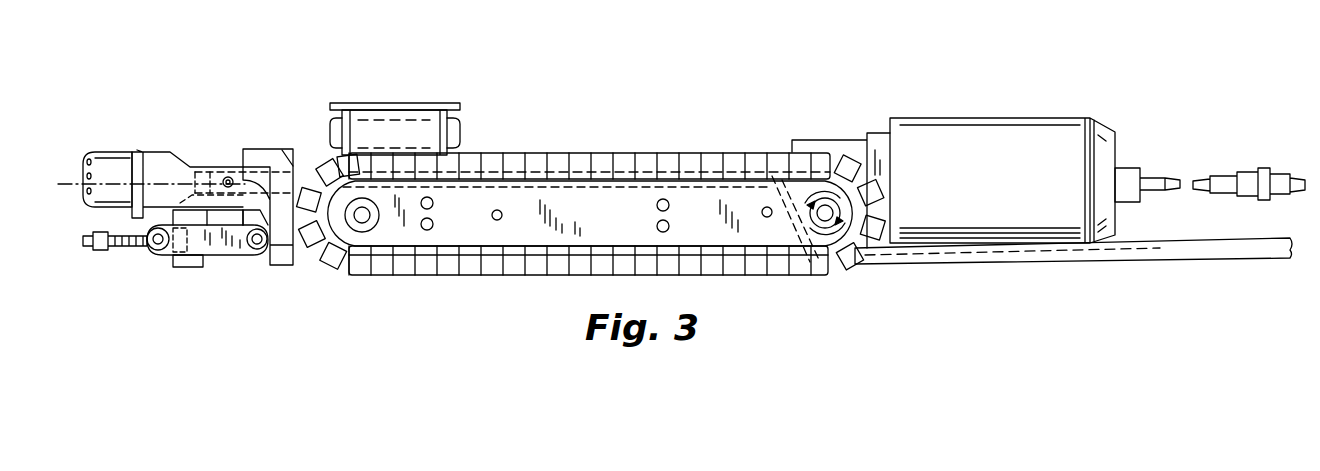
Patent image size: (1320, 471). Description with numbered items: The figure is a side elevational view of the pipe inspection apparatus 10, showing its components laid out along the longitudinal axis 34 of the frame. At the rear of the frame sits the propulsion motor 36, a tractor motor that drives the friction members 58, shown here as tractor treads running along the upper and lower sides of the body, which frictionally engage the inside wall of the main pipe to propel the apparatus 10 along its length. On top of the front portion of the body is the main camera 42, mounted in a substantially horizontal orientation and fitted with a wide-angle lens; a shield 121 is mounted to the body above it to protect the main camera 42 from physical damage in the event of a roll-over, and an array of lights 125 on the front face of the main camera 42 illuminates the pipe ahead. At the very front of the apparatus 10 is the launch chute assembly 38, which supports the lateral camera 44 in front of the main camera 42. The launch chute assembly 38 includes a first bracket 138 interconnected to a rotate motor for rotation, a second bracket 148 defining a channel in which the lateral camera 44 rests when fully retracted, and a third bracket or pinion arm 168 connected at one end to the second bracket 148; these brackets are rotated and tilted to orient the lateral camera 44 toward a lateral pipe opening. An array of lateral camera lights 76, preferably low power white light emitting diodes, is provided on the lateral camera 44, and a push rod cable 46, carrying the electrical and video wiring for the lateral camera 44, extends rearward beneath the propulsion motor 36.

The apparatus 10 is at (650, 80).
The longitudinal axis 34 is at (72, 186).
The propulsion motor 36 is at (1025, 125).
The launch chute assembly 38 is at (245, 291).
The main camera 42 is at (418, 122).
The lateral camera 44 is at (125, 158).
The push rod cable 46 is at (1243, 243).
The friction members 58 is at (690, 158).
The lateral camera lights 76 is at (84, 162).
The shield 121 is at (442, 103).
The lights 125 is at (326, 118).
The first bracket 138 is at (289, 152).
The second bracket 148 is at (262, 214).
The third bracket or pinion arm 168 is at (212, 242).